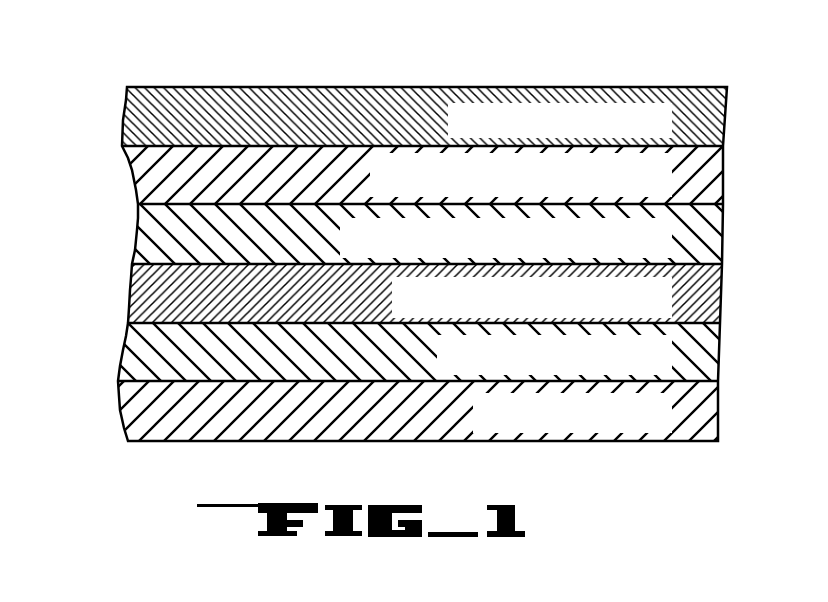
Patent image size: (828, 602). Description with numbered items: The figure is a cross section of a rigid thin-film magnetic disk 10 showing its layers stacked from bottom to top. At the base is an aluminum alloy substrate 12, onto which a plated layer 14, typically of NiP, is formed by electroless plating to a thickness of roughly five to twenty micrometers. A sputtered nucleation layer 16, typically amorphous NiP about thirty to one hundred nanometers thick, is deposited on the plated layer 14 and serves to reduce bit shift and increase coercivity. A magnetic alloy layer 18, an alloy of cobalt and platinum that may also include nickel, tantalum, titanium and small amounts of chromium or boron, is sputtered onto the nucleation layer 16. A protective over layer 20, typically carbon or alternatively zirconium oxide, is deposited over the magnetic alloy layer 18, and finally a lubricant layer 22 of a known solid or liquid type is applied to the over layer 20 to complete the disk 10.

The rigid thin-film magnetic disk 10 is at (390, 226).
The aluminum alloy substrate 12 is at (514, 426).
The plated layer 14 is at (471, 369).
The sputtered nucleation layer 16 is at (426, 309).
The magnetic alloy layer 18 is at (370, 251).
The protective over layer 20 is at (399, 191).
The lubricant layer 22 is at (494, 133).